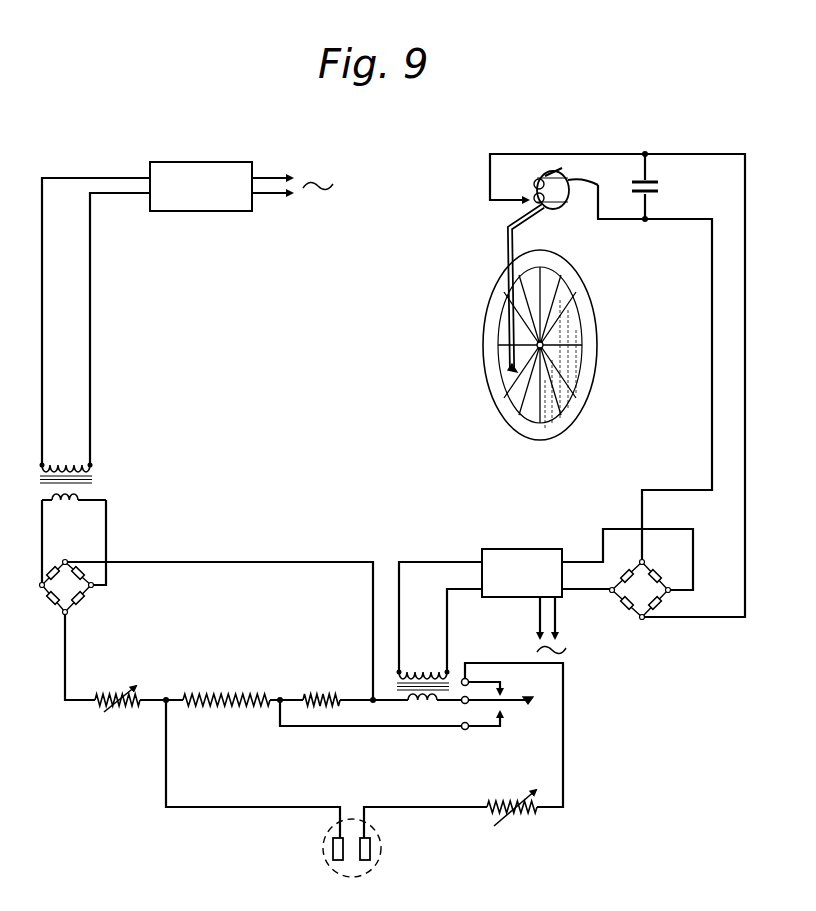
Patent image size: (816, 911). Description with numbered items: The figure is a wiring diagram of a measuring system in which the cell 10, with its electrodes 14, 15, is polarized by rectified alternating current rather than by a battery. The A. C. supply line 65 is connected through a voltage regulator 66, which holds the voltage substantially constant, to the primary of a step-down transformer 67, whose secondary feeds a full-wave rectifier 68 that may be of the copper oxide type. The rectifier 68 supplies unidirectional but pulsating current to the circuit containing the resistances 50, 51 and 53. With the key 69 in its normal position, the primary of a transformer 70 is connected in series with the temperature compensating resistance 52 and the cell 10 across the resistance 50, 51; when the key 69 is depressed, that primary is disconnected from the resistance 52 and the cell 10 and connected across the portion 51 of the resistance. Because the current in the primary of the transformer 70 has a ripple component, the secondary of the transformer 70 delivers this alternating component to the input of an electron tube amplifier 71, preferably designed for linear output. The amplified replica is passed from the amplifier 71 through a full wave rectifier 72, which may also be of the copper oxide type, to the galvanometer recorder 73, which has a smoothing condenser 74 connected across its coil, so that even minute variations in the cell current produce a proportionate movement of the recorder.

The cell 10 is at (322, 845).
The electrode 14 is at (335, 858).
The electrode 15 is at (368, 855).
The resistance 50 is at (232, 706).
The resistance 51 is at (313, 694).
The temperature compensating resistance 52 is at (490, 827).
The resistance 53 is at (110, 706).
The A. C. supply line 65 is at (273, 198).
The voltage regulator 66 is at (203, 212).
The step-down transformer 67 is at (96, 480).
The full-wave rectifier 68 is at (78, 590).
The key 69 is at (518, 706).
The transformer 70 is at (390, 685).
The electron tube amplifier 71 is at (553, 548).
The full wave rectifier 72 is at (640, 600).
The galvanometer recorder 73 is at (566, 205).
The smoothing condenser 74 is at (662, 190).